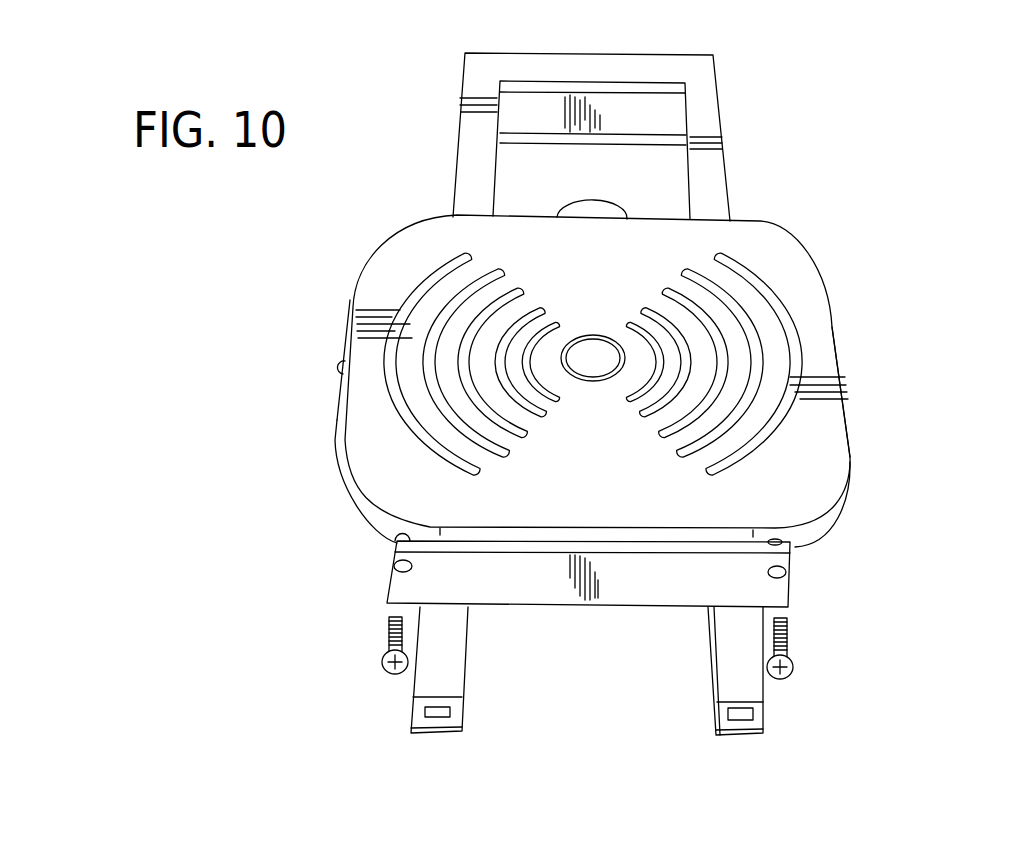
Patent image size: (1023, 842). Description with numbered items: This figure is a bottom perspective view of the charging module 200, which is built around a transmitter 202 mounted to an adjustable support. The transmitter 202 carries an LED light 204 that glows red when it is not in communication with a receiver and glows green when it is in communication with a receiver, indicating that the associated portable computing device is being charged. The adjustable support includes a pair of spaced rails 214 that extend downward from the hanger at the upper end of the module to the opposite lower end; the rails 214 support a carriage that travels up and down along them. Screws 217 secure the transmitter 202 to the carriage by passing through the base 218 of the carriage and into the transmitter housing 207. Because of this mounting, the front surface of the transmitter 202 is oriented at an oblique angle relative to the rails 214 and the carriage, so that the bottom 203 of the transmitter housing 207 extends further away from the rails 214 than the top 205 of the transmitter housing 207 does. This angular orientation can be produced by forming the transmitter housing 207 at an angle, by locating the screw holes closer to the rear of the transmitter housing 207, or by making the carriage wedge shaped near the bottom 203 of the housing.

The charging module 200 is at (749, 110).
The transmitter 202 is at (843, 396).
The bottom 203 is at (820, 522).
The LED light 204 is at (338, 367).
The top 205 is at (750, 220).
The transmitter housing 207 is at (818, 318).
The rails 214 is at (463, 730).
The screws 217 is at (382, 661).
The base 218 is at (790, 592).